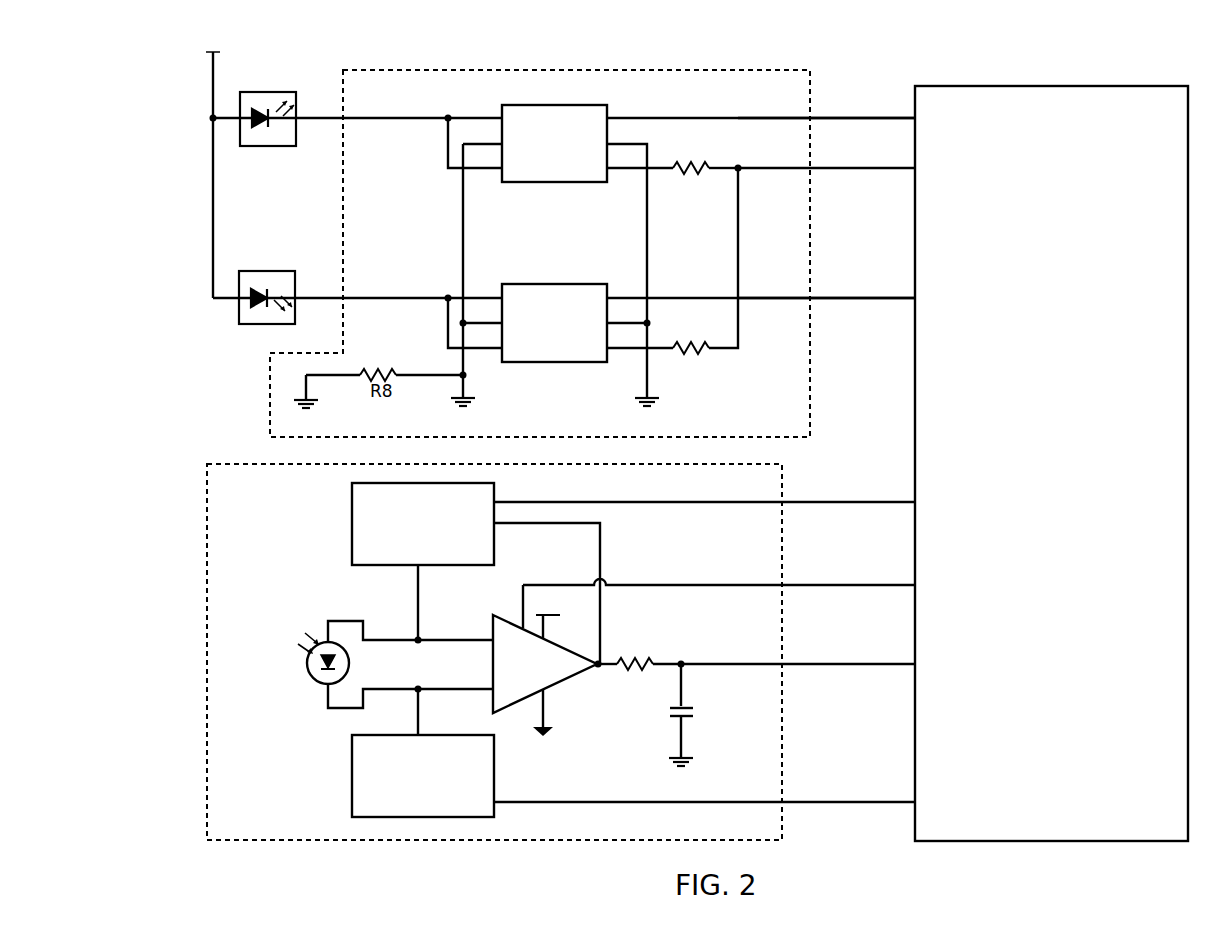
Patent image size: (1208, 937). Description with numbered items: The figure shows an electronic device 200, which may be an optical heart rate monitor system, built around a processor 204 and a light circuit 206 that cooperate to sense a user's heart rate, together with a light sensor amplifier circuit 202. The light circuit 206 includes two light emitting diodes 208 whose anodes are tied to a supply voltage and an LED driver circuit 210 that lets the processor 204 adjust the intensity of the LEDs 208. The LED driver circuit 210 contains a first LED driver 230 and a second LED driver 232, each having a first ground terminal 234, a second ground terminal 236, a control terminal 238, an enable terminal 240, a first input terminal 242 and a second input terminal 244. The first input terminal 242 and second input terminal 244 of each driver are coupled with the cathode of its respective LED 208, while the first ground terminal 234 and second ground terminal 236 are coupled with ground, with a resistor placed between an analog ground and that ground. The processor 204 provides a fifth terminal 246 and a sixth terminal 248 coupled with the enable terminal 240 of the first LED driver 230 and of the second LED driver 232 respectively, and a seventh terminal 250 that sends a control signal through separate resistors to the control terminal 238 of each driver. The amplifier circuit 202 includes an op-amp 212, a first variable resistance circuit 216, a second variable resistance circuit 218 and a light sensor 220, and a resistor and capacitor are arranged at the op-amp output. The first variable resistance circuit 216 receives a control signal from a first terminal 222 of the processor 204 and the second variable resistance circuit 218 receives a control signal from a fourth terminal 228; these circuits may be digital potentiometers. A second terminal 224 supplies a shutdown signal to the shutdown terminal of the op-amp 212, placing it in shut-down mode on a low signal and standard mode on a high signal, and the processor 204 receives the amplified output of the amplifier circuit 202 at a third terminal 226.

The electronic device 200 is at (866, 86).
The light sensor amplifier circuit 202 is at (207, 751).
The processor 204 is at (1051, 463).
The light circuit 206 is at (182, 197).
The light emitting diodes 208 is at (268, 93).
The LED driver circuit 210 is at (270, 368).
The op-amp 212 is at (547, 660).
The first variable resistance circuit 216 is at (476, 573).
The second variable resistance circuit 218 is at (423, 753).
The light sensor 220 is at (308, 681).
The first terminal 222 is at (910, 499).
The second terminal 224 is at (910, 582).
The third terminal 226 is at (908, 665).
The fourth terminal 228 is at (910, 802).
The first LED driver 230 is at (554, 143).
The second LED driver 232 is at (554, 323).
The first ground terminal 234 is at (500, 145).
The second ground terminal 236 is at (609, 146).
The control terminal 238 is at (603, 182).
The enable terminal 240 is at (609, 112).
The first input terminal 242 is at (502, 182).
The second input terminal 244 is at (500, 111).
The fifth terminal 246 is at (912, 126).
The sixth terminal 248 is at (912, 292).
The seventh terminal 250 is at (914, 180).